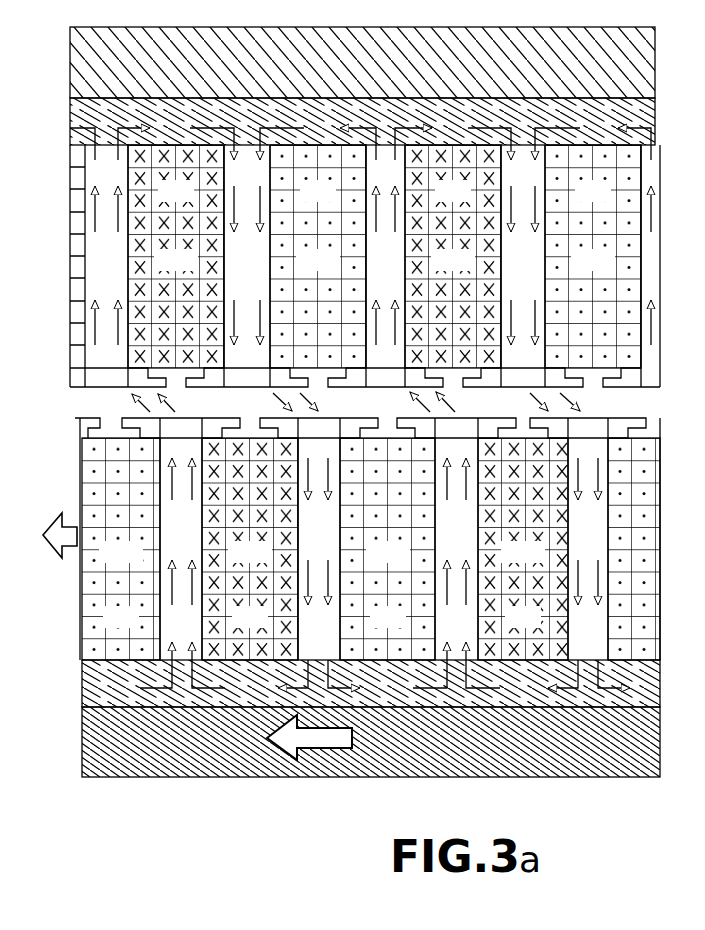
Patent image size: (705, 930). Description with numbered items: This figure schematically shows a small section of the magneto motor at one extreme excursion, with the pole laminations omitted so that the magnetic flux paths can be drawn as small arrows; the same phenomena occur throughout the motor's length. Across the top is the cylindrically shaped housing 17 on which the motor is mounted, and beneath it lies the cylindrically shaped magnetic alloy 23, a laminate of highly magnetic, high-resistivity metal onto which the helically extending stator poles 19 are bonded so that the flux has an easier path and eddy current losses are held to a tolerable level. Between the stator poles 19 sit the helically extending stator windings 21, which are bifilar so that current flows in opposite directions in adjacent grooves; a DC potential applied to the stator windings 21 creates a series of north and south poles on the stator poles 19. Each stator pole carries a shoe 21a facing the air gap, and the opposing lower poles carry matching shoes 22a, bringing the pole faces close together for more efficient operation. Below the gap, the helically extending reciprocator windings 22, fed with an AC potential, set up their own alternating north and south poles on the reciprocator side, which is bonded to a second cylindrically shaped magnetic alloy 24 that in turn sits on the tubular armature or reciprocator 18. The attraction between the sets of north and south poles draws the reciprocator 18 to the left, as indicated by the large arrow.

The housing 17 is at (461, 82).
The cylindrically shaped magnetic alloy 23 is at (598, 128).
The stator windings 21 is at (355, 266).
The stator poles 19 is at (514, 274).
The upper pole shoe 21a is at (607, 388).
The lower pole shoe 22a is at (402, 418).
The reciprocator windings 22 is at (371, 549).
The cylindrically shaped magnetic alloy 24 is at (616, 696).
The tubular armature or reciprocator 18 is at (510, 751).